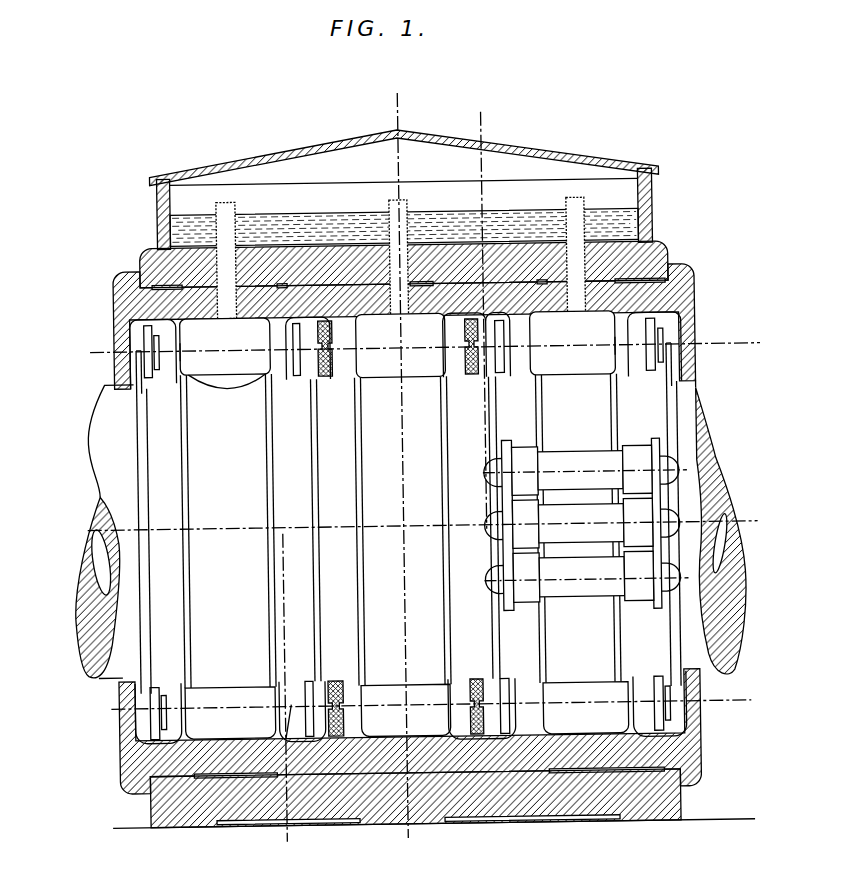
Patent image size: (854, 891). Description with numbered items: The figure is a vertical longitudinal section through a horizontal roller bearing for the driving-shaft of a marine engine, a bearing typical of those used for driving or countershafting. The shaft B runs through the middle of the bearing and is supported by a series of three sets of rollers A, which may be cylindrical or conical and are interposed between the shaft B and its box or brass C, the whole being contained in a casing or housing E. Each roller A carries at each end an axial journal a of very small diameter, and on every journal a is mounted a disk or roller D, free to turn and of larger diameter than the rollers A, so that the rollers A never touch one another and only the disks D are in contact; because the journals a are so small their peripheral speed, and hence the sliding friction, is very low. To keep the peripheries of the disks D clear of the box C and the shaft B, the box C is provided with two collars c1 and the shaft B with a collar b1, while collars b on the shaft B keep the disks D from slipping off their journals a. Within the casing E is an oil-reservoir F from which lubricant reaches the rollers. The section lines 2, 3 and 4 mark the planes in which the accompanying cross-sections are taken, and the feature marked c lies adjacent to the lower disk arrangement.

The rollers A is at (435, 524).
The shaft B is at (409, 530).
The box or brass C is at (120, 741).
The disk or roller D is at (512, 433).
The casing or housing E is at (660, 248).
The oil-reservoir F is at (404, 215).
The axial journal a is at (325, 348).
The collar b is at (320, 618).
The collar b1 is at (226, 383).
The plate c is at (286, 715).
The collar c1 is at (270, 328).
The section line 2 2 is at (478, 320).
The section line 3 3 is at (408, 465).
The section line 4 4 is at (295, 690).